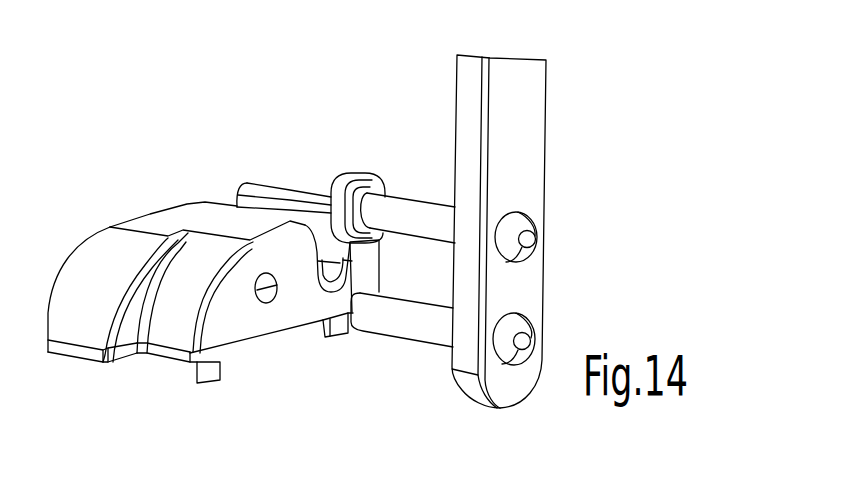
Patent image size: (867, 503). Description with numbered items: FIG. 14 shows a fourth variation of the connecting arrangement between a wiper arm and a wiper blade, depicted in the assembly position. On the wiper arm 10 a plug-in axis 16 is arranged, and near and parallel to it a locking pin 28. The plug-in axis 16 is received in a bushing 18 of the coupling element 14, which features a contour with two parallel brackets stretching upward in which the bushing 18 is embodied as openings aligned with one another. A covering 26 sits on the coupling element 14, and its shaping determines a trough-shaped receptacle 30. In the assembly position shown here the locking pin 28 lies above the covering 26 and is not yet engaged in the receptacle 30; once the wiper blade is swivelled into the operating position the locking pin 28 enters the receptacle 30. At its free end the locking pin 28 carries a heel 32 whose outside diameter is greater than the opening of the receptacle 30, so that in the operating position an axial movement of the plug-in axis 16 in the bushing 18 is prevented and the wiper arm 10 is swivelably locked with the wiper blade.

The wiper arm 10 is at (513, 165).
The coupling element 14 is at (213, 299).
The plug-in axis 16 is at (413, 332).
The bushing 18 is at (269, 298).
The covering 26 is at (182, 220).
The locking pin 28 is at (408, 217).
The trough-shaped receptacle 30 is at (268, 198).
The heel 32 is at (353, 174).